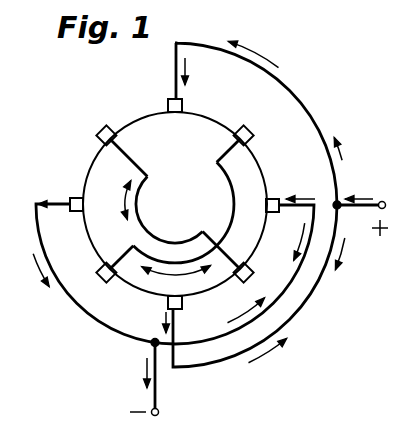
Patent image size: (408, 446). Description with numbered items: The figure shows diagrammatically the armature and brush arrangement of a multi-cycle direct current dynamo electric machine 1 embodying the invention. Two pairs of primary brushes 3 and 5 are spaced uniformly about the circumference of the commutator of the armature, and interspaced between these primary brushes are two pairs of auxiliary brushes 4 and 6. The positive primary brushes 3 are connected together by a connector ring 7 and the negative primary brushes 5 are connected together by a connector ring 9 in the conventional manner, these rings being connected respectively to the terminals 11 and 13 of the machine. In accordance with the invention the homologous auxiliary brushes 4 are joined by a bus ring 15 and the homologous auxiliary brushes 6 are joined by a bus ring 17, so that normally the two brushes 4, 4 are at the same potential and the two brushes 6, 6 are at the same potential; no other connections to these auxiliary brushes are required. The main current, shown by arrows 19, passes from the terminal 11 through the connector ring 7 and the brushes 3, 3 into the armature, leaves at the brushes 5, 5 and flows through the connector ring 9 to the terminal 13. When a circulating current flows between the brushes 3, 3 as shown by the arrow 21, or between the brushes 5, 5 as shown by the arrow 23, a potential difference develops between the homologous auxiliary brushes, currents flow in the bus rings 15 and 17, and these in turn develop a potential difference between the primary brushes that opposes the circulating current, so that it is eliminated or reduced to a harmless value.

The stator casing 1 is at (217, 121).
The positive primary brushes 3 is at (175, 204).
The auxiliary brushes 4 is at (174, 203).
The negative primary brushes 5 is at (174, 207).
The auxiliary brushes 6 is at (174, 203).
The connector ring 7 is at (308, 112).
The connector ring 9 is at (88, 318).
The terminal 11 is at (370, 217).
The terminal 13 is at (158, 382).
The bus ring 15 is at (229, 182).
The bus ring 17 is at (137, 203).
The arrows 19 is at (342, 170).
The arrow 21 is at (188, 71).
The arrow 23 is at (64, 212).